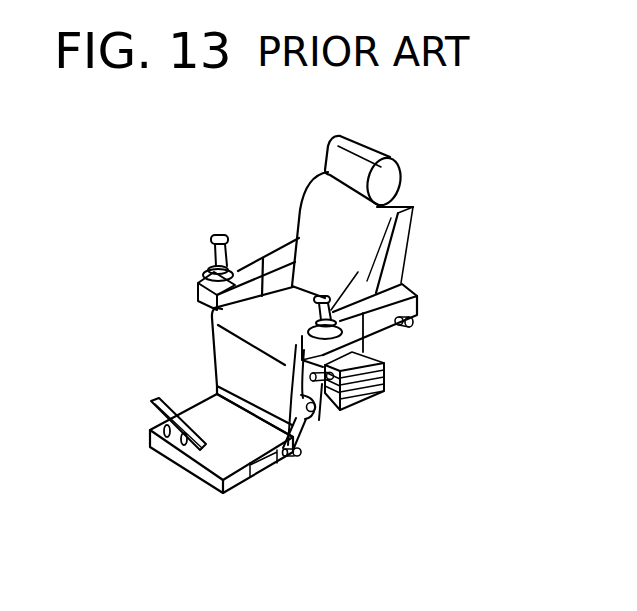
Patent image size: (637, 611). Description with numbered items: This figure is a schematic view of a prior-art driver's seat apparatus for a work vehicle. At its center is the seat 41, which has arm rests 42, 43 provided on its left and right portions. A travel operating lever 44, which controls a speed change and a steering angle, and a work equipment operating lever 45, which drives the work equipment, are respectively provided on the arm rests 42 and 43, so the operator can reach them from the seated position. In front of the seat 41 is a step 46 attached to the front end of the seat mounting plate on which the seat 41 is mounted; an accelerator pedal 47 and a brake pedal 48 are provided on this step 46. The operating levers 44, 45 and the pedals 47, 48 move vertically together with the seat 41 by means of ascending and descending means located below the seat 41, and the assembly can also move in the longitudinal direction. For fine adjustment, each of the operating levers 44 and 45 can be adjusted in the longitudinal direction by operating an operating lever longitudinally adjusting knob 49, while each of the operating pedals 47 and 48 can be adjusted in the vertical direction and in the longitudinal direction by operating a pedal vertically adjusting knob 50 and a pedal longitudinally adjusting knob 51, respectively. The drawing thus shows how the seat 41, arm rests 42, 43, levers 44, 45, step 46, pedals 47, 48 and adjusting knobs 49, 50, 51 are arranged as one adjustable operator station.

The seat 41 is at (213, 338).
The arm rest 42 is at (418, 292).
The arm rest 43 is at (265, 262).
The travel operating lever 44 is at (337, 292).
The work equipment operating lever 45 is at (214, 250).
The step 46 is at (150, 429).
The accelerator pedal 47 is at (166, 440).
The brake pedal 48 is at (186, 447).
The operating lever longitudinally adjusting knob 49 is at (404, 326).
The pedal vertically adjusting knob 50 is at (319, 432).
The pedal longitudinally adjusting knob 51 is at (301, 457).